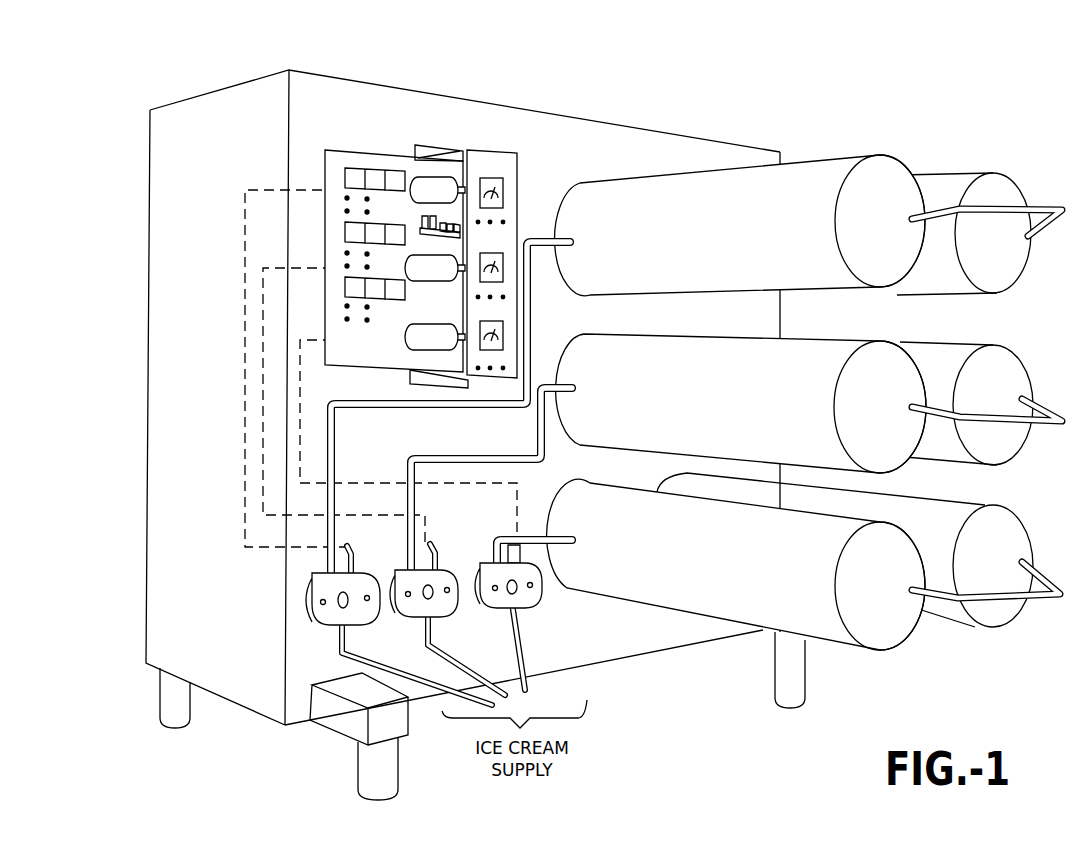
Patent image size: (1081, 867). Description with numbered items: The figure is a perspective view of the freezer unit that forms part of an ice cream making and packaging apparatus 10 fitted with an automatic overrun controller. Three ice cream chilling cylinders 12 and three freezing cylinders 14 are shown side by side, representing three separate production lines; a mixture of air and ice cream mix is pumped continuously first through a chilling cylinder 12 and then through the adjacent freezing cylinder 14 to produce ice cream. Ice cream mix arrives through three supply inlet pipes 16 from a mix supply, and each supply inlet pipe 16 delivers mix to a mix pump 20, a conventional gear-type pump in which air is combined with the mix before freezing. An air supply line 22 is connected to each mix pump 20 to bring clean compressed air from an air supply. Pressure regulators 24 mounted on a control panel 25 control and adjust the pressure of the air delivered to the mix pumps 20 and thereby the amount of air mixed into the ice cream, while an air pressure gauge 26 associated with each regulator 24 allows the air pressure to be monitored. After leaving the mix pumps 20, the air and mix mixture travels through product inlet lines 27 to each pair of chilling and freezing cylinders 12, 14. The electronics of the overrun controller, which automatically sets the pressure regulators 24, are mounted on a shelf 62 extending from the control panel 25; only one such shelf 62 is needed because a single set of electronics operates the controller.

The ice cream making and packaging apparatus 10 is at (133, 103).
The ice cream chilling cylinder 12 is at (714, 250).
The freezing cylinder 14 is at (947, 185).
The supply inlet pipe 16 is at (408, 676).
The mix pump 20 is at (490, 600).
The air supply line 22 is at (300, 410).
The pressure regulator 24 is at (435, 183).
The control panel 25 is at (372, 153).
The air pressure gauge 26 is at (500, 197).
The product inlet line 27 is at (562, 238).
The shelf 62 is at (413, 228).